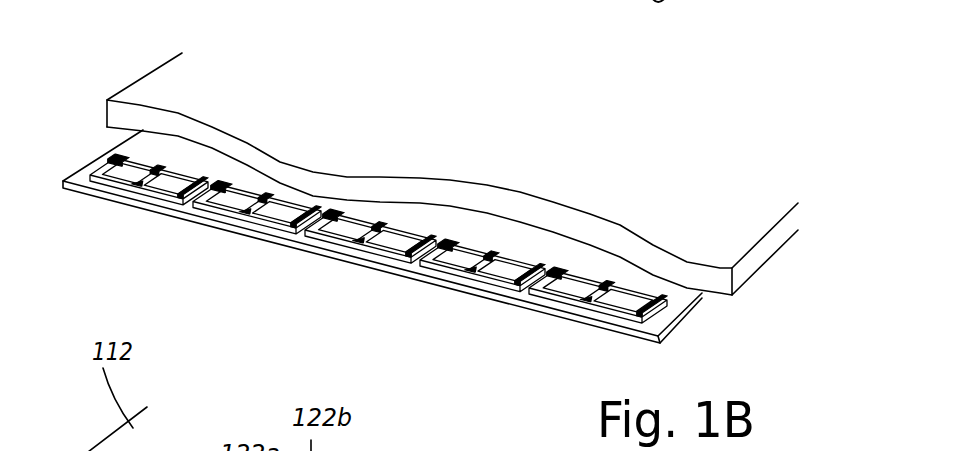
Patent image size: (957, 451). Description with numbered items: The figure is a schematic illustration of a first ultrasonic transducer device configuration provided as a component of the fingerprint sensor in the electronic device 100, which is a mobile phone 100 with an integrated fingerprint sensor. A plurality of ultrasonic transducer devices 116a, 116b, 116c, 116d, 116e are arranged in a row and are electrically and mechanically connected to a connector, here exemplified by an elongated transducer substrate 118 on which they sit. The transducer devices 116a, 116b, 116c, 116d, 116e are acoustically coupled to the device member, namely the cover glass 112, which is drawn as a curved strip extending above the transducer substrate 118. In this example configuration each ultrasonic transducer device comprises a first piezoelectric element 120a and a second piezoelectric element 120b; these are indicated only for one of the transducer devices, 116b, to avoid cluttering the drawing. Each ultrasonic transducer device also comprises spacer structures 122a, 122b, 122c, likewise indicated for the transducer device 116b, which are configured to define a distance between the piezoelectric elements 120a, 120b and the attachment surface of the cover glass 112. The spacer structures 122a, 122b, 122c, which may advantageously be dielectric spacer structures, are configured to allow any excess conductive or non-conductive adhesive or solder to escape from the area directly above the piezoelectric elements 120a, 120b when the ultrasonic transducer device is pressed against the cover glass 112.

The mobile phone 100 is at (626, 107).
The cover glass 112 is at (158, 88).
The ultrasonic transducer device 116a is at (112, 184).
The ultrasonic transducer device 116b is at (240, 218).
The ultrasonic transducer device 116c is at (348, 245).
The ultrasonic transducer device 116d is at (468, 276).
The ultrasonic transducer device 116e is at (597, 308).
The transducer substrate 118 is at (140, 204).
The first piezoelectric element 120a is at (240, 200).
The second piezoelectric element 120b is at (283, 208).
The spacer structure 122a is at (212, 188).
The spacer structure 122b is at (256, 197).
The spacer structure 122c is at (296, 210).